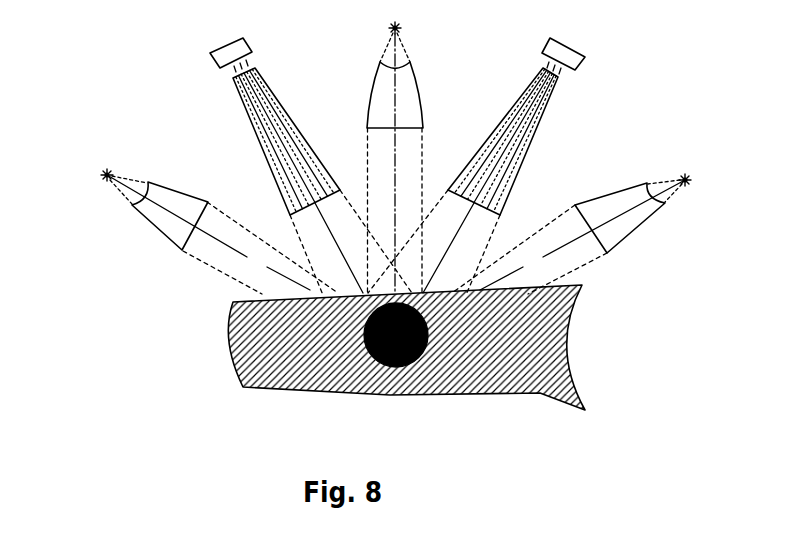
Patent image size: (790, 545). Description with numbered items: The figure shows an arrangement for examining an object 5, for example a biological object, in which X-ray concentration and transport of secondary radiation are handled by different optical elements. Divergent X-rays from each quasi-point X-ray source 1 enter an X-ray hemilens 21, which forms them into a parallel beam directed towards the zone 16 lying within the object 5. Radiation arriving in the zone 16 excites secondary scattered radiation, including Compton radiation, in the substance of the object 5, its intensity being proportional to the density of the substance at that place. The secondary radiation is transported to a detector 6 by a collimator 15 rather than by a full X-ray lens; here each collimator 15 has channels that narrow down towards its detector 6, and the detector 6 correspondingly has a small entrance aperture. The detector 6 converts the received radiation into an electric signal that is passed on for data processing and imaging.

The X-ray source 1 is at (104, 181).
The object 5 is at (243, 341).
The detector 6 is at (212, 57).
The collimator 15 is at (243, 103).
The zone 16 is at (388, 367).
The X-ray hemilens 21 is at (173, 243).